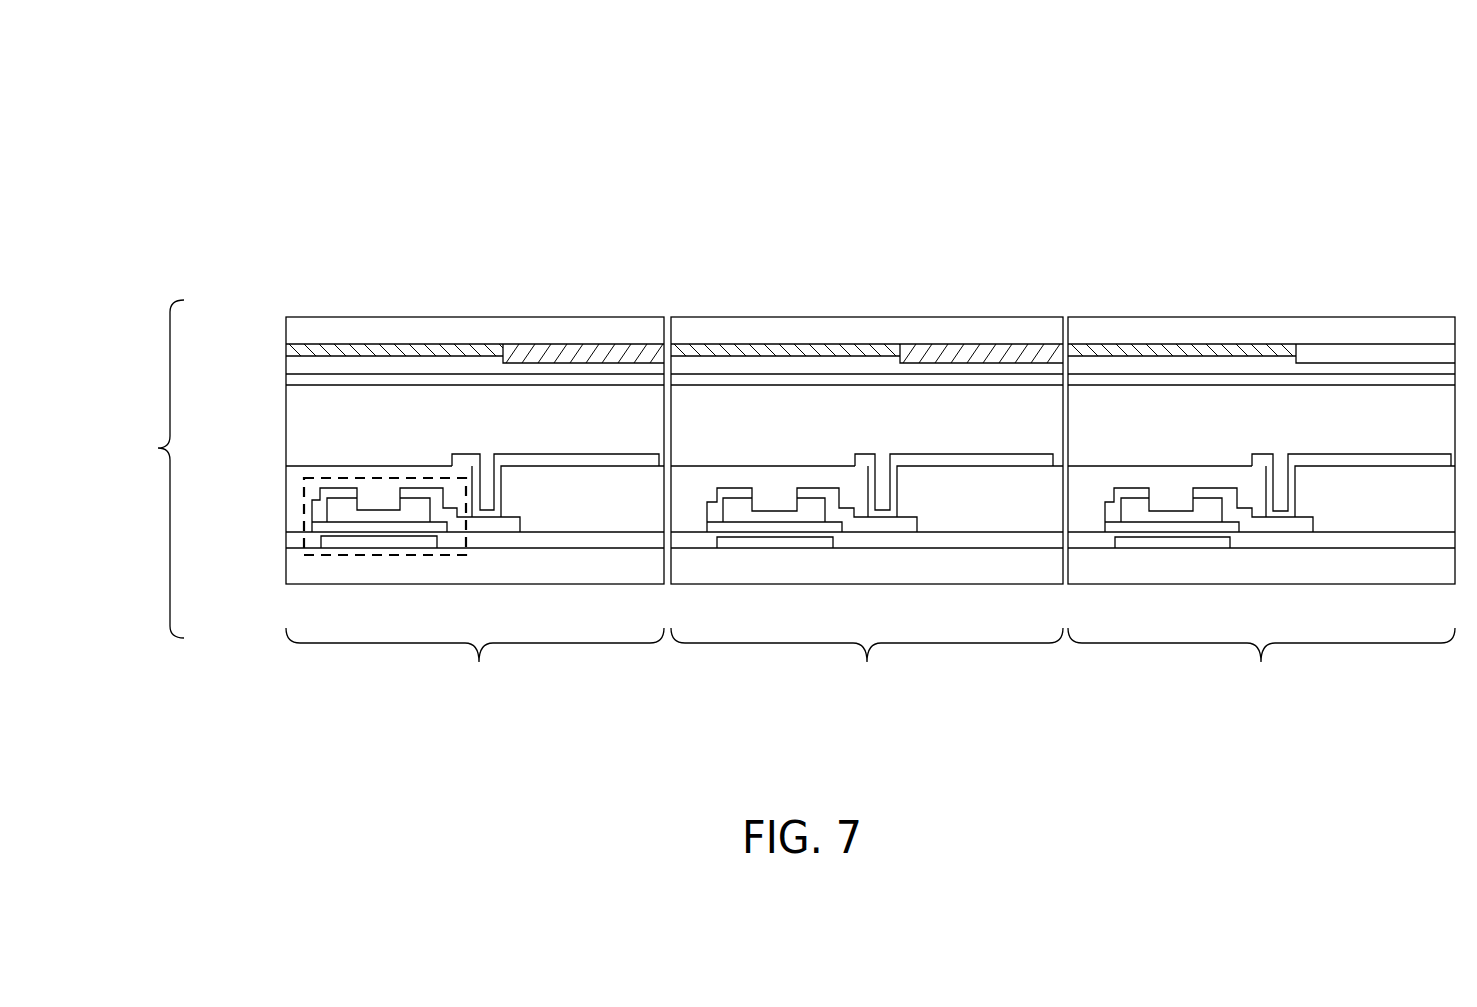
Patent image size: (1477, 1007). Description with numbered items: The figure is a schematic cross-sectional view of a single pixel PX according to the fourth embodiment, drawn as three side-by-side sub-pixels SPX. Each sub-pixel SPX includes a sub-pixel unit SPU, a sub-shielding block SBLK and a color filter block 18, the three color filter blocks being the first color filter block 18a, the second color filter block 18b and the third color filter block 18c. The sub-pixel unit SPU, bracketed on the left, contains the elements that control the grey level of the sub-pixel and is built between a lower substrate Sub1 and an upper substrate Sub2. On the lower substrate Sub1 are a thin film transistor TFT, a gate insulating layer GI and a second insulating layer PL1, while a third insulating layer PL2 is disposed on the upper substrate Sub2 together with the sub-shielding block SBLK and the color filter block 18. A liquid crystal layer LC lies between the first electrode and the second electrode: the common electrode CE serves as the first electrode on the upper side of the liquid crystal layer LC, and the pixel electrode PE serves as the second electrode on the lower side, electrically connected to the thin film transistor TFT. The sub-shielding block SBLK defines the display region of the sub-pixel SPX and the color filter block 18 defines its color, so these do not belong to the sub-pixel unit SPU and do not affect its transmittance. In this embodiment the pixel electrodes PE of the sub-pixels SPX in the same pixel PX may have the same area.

The lower substrate Sub1 is at (322, 575).
The upper substrate Sub2 is at (303, 333).
The sub-shielding block SBLK is at (390, 345).
The color filter block 18 is at (966, 285).
The first color filter block 18a is at (520, 352).
The second color filter block 18b is at (948, 353).
The third color filter block 18c is at (1355, 353).
The third insulating layer PL2 is at (308, 362).
The common electrode CE is at (308, 379).
The liquid crystal layer LC is at (368, 426).
The pixel electrode PE is at (512, 462).
The second insulating layer PL1 is at (300, 503).
The thin film transistor TFT is at (304, 517).
The gate insulating layer GI is at (304, 540).
The sub-pixel unit SPU is at (142, 469).
The sub-pixel SPX is at (870, 664).
The pixel PX is at (1344, 124).